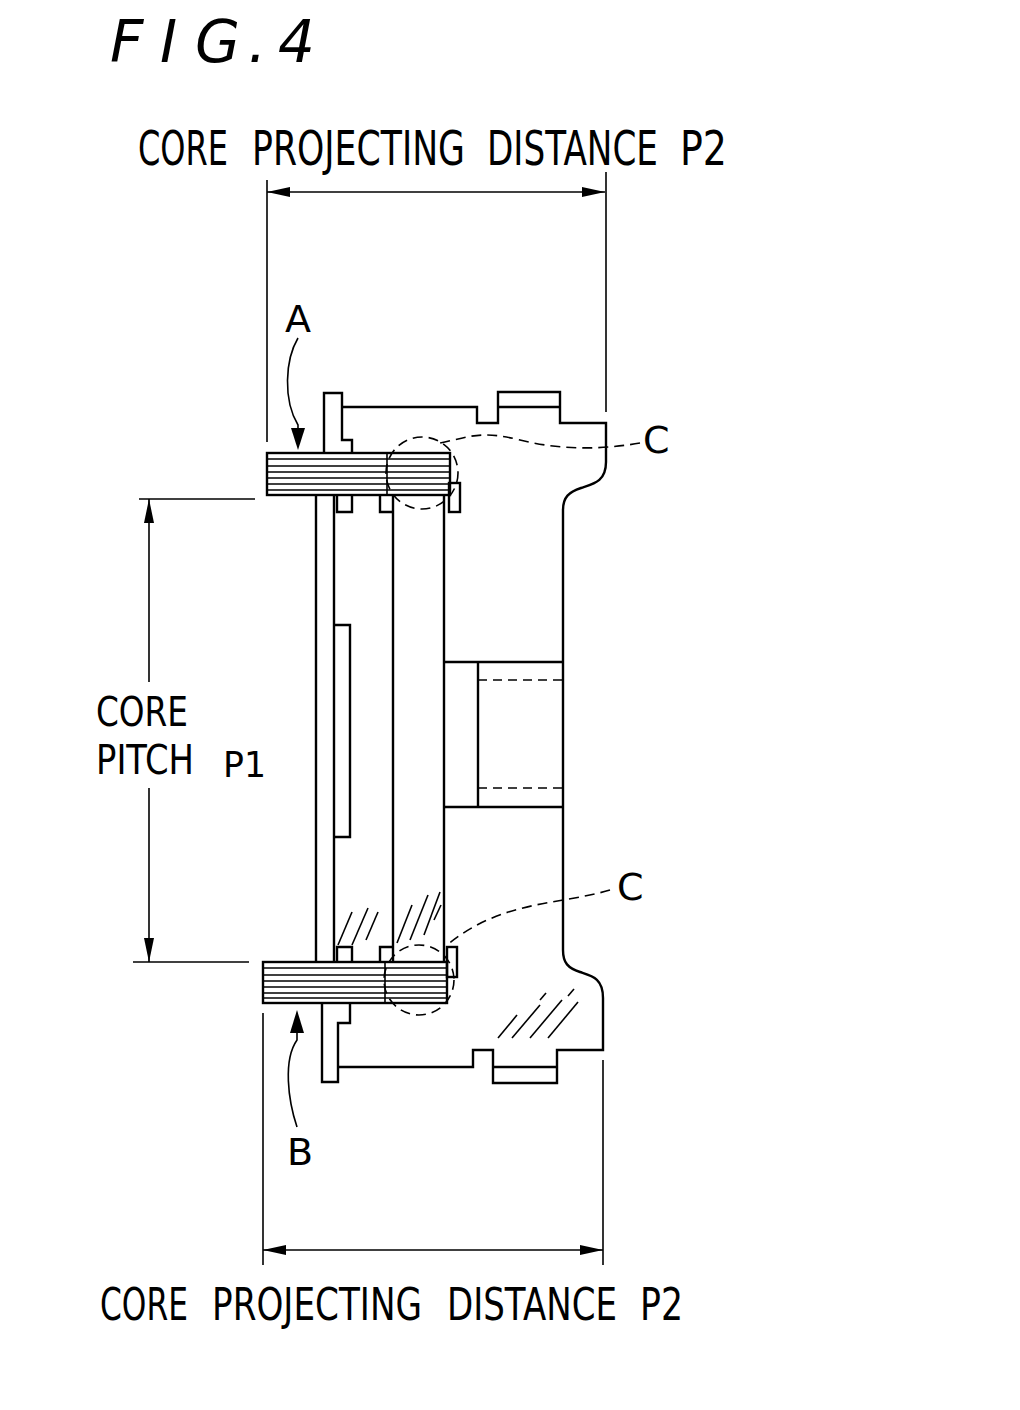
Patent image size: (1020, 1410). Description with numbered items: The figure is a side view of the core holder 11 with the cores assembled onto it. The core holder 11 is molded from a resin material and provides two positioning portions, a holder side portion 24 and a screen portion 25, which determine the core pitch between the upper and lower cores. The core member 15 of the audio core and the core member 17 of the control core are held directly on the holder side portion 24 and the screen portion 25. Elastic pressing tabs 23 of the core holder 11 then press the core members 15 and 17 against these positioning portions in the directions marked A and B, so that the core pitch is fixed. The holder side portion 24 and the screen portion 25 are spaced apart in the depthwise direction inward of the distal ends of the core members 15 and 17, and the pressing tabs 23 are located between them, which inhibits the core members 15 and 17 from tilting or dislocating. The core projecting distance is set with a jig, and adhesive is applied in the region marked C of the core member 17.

The core holder 11 is at (528, 368).
The core member 15 is at (270, 453).
The core member 17 is at (263, 1006).
The elastic pressing tabs 23 is at (335, 393).
The holder side portion 24 is at (317, 711).
The screen portion 25 is at (423, 838).